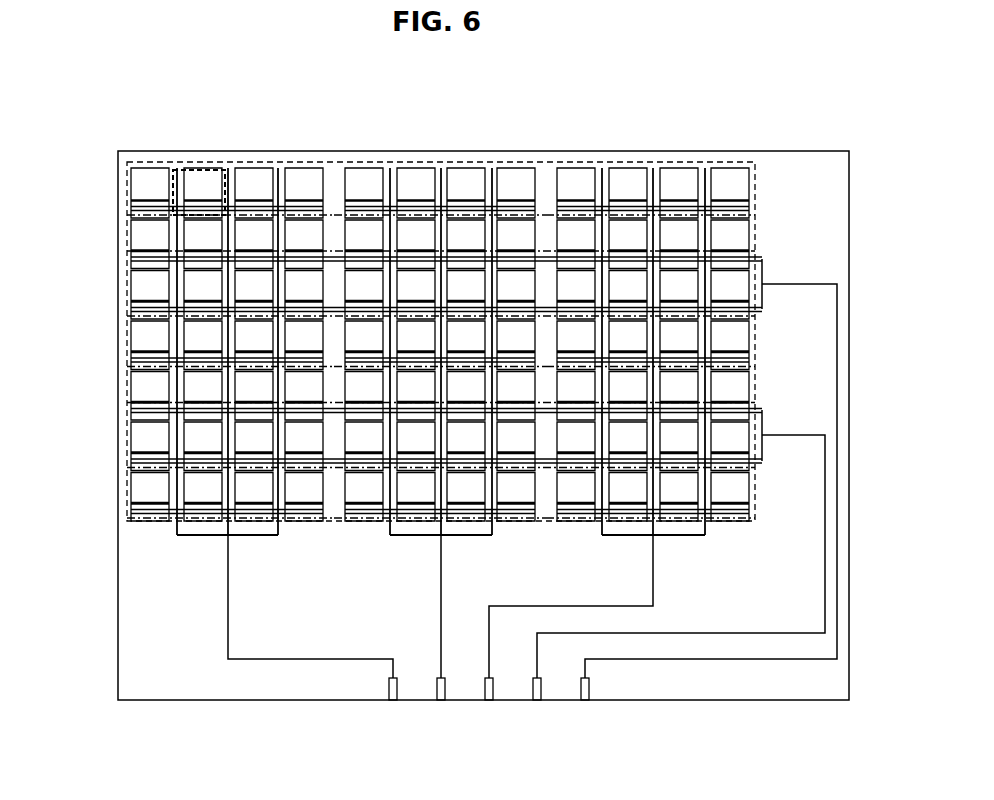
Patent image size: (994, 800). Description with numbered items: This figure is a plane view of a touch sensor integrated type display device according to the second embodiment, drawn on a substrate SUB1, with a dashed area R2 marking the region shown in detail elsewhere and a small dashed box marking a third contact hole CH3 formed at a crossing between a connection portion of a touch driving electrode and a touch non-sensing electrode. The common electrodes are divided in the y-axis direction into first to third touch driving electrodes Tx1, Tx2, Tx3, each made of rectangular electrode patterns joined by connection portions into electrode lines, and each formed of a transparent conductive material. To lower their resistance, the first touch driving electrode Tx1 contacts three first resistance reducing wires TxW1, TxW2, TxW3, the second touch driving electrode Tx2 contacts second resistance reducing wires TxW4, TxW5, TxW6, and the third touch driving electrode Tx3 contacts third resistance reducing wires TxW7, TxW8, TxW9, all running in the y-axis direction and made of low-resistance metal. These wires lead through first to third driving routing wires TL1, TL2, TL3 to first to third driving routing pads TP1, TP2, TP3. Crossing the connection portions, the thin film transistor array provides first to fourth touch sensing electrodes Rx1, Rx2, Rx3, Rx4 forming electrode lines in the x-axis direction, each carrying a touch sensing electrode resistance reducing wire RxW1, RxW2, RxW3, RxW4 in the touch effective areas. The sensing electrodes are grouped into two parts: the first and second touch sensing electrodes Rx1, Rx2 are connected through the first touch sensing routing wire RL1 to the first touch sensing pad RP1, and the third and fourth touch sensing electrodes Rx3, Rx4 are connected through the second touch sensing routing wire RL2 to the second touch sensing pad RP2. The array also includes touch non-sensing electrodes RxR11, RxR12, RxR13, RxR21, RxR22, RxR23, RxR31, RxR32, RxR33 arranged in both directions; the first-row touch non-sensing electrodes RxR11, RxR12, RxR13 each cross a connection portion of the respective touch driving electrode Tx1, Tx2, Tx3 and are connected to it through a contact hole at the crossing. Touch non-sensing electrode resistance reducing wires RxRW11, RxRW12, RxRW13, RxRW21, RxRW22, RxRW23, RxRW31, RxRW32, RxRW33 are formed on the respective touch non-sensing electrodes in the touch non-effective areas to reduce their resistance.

The substrate SUB1 is at (711, 701).
The area R2 is at (172, 186).
The third contact hole CH3 is at (173, 197).
The first touch driving electrode Tx1 is at (302, 179).
The second touch driving electrode Tx2 is at (523, 177).
The third touch driving electrode Tx3 is at (737, 177).
The first touch driving electrode resistance reducing wire TxW1 is at (180, 526).
The first touch driving electrode resistance reducing wire TxW2 is at (231, 526).
The first touch driving electrode resistance reducing wire TxW3 is at (281, 526).
The second touch driving electrode resistance reducing wire TxW4 is at (392, 526).
The second touch driving electrode resistance reducing wire TxW5 is at (444, 526).
The second touch driving electrode resistance reducing wire TxW6 is at (495, 526).
The third touch driving electrode resistance reducing wire TxW7 is at (604, 526).
The third touch driving electrode resistance reducing wire TxW8 is at (656, 526).
The third touch driving electrode resistance reducing wire TxW9 is at (707, 526).
The touch non-sensing electrode resistance reducing wire RxRW11 is at (131, 207).
The touch non-sensing electrode resistance reducing wire RxRW12 is at (465, 206).
The touch non-sensing electrode resistance reducing wire RxRW13 is at (676, 206).
The touch non-sensing electrode resistance reducing wire RxRW21 is at (131, 358).
The touch non-sensing electrode resistance reducing wire RxRW22 is at (342, 362).
The touch non-sensing electrode resistance reducing wire RxRW23 is at (750, 361).
The touch non-sensing electrode resistance reducing wire RxRW31 is at (131, 510).
The touch non-sensing electrode resistance reducing wire RxRW32 is at (500, 514).
The touch non-sensing electrode resistance reducing wire RxRW33 is at (732, 514).
The 1-1 touch non-sensing electrode RxR11 is at (127, 215).
The 1-2 touch non-sensing electrode RxR12 is at (356, 212).
The 1-3 touch non-sensing electrode RxR13 is at (752, 208).
The second touch non-sensing electrode RxR21 is at (127, 366).
The second touch non-sensing electrode RxR22 is at (345, 367).
The second touch non-sensing electrode RxR23 is at (750, 366).
The third touch non-sensing electrode RxR31 is at (127, 518).
The third touch non-sensing electrode RxR32 is at (367, 517).
The third touch non-sensing electrode RxR33 is at (750, 518).
The touch sensing electrode resistance reducing wire RxW1 is at (757, 260).
The touch sensing electrode resistance reducing wire RxW2 is at (760, 309).
The touch sensing electrode resistance reducing wire RxW3 is at (757, 411).
The touch sensing electrode resistance reducing wire RxW4 is at (757, 461).
The first touch sensing electrode Rx1 is at (750, 251).
The second touch sensing electrode Rx2 is at (750, 316).
The third touch sensing electrode Rx3 is at (750, 402).
The fourth touch sensing electrode Rx4 is at (750, 468).
The first driving routing wire TL1 is at (372, 659).
The second driving routing wire TL2 is at (441, 621).
The third driving routing wire TL3 is at (540, 606).
The first touch sensing routing wire RL1 is at (690, 659).
The second touch sensing routing wire RL2 is at (655, 633).
The first driving routing pad TP1 is at (392, 698).
The second driving routing pad TP2 is at (439, 698).
The third driving routing pad TP3 is at (487, 698).
The first touch sensing pad RP1 is at (582, 698).
The second touch sensing pad RP2 is at (534, 698).